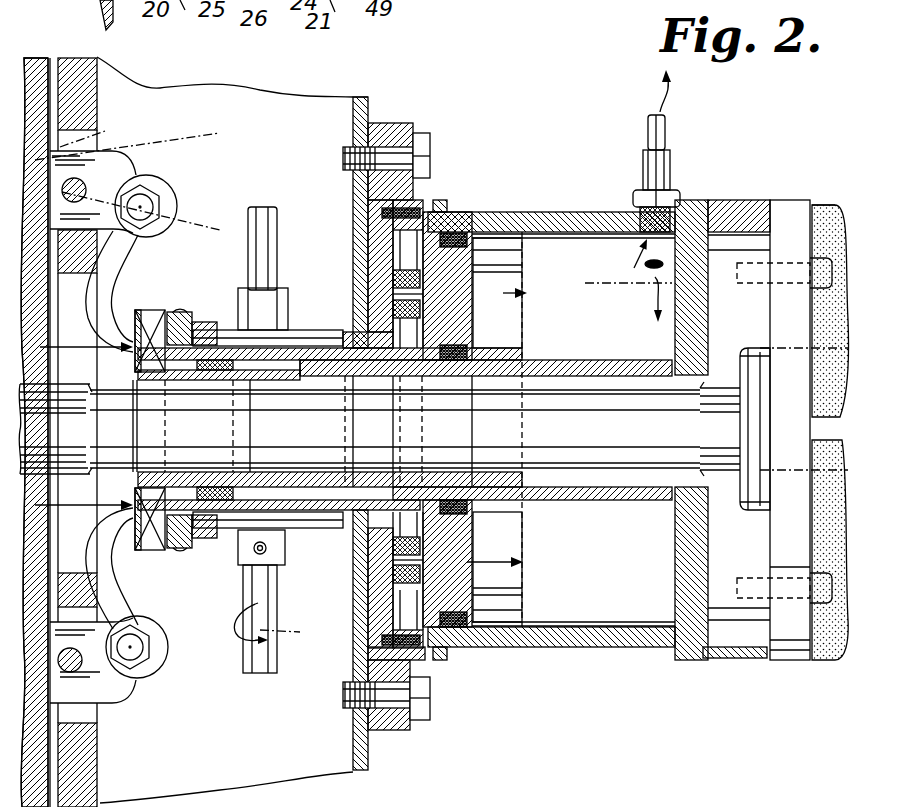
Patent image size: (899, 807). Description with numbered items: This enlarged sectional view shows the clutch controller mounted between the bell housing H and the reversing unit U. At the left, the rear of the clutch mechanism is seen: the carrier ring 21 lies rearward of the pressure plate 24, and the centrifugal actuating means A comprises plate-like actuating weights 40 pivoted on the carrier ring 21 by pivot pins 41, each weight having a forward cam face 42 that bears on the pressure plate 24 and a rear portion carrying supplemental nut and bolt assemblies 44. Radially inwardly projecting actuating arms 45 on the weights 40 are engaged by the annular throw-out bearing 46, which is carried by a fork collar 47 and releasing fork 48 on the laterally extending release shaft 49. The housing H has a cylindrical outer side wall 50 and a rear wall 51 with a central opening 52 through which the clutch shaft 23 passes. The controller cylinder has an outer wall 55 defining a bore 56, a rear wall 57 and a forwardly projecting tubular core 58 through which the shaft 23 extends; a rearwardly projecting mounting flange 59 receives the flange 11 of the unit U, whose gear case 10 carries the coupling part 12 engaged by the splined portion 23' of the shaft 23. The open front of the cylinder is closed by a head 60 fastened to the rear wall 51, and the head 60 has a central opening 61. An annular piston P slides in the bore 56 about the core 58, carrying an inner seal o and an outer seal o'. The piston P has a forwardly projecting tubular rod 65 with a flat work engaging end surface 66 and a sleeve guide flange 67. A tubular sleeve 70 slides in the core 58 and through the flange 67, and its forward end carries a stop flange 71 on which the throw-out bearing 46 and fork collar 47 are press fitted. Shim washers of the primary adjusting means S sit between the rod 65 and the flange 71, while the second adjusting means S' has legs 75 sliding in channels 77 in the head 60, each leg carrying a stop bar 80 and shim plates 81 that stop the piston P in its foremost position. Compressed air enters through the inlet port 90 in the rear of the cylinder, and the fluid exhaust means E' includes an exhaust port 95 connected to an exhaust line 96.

The gear case 10 is at (838, 620).
The mounting flange 11 is at (791, 207).
The shaft coupling part 12 is at (757, 345).
The carrier ring 21 is at (92, 748).
The clutch shaft 23 is at (395, 429).
The splined portion 23' is at (731, 463).
The pressure plate 24 is at (68, 38).
The actuating weights 40 is at (112, 168).
The pivot pins 41 is at (83, 186).
The cam faces 42 is at (110, 694).
The nut and bolt assemblies 44 is at (212, 220).
The actuating arms 45 is at (155, 268).
The throw-out bearing 46 is at (143, 327).
The fork collar 47 is at (187, 312).
The releasing fork 48 is at (262, 300).
The release shaft 49 is at (278, 226).
The outer side wall 50 is at (266, 95).
The rear wall 51 is at (370, 102).
The central opening 52 is at (343, 342).
The outer wall 55 is at (640, 633).
The bore 56 is at (622, 603).
The rear wall 57 is at (677, 546).
The tubular core 58 is at (592, 503).
The mounting flange 59 is at (738, 203).
The head 60 is at (393, 125).
The central opening 61 is at (370, 364).
The tubular rod 65 is at (324, 507).
The work engaging end surface 66 is at (221, 362).
The sleeve guide flange 67 is at (248, 527).
The tubular sleeve 70 is at (388, 472).
The stop flange 71 is at (173, 390).
The legs 75 is at (392, 572).
The channels 77 is at (392, 553).
The stop bar 80 is at (473, 523).
The shim plates 81 is at (418, 571).
The air inlet port 90 is at (646, 270).
The exhaust port 95 is at (674, 205).
The exhaust line 96 is at (651, 137).
The centrifugal actuating means A is at (136, 162).
The bell housing H is at (348, 96).
The annular piston P is at (474, 258).
The primary shim type adjusting means S is at (205, 443).
The second adjusting means S' is at (366, 289).
The fluid exhaust means E' is at (631, 170).
The reversing unit U is at (826, 202).
The inner seal o is at (472, 413).
The outer seal o' is at (459, 397).